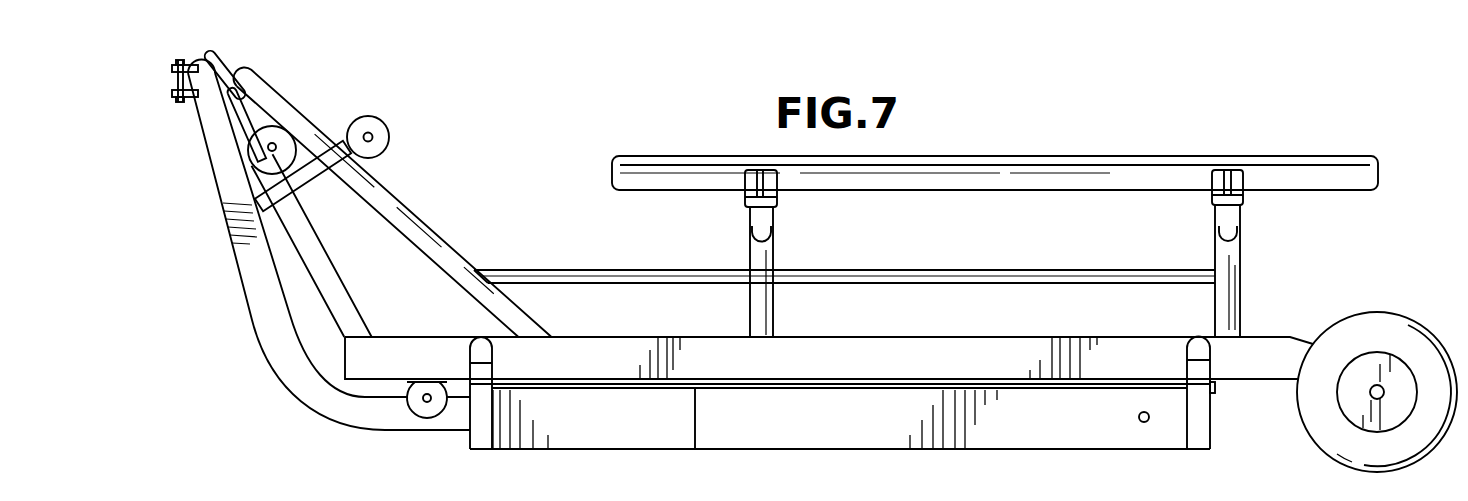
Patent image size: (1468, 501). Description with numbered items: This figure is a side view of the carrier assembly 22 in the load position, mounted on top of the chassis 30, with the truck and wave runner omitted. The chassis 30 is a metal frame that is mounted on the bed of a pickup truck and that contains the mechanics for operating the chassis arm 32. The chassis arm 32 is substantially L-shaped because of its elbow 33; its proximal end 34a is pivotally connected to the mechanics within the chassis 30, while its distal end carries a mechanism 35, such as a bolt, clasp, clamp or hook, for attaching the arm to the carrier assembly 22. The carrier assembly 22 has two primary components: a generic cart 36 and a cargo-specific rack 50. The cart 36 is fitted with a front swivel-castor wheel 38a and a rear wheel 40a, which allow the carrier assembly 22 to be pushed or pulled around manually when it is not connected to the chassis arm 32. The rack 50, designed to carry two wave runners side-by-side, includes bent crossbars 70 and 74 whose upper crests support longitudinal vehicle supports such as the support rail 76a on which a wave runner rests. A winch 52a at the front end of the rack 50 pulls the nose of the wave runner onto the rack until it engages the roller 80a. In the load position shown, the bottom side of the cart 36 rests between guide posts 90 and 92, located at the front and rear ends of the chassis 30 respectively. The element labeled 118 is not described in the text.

The carrier assembly 22 is at (317, 104).
The chassis 30 is at (540, 450).
The chassis arm 32 is at (235, 266).
The elbow 33 is at (294, 396).
The proximal end 34a is at (1080, 441).
The mechanism 35 is at (194, 60).
The cart 36 is at (1283, 336).
The front wheel 38a is at (426, 418).
The rear wheel 40a is at (1408, 325).
The rack 50 is at (1213, 243).
The winch 52a is at (258, 150).
The crossbar 70 is at (770, 222).
The crossbar 74 is at (1238, 222).
The longitudinal vehicle support 76a is at (1340, 190).
The roller 80a is at (390, 136).
The guide post 90 is at (493, 355).
The guide post 92 is at (1187, 352).
The locking member 118 is at (1035, 500).